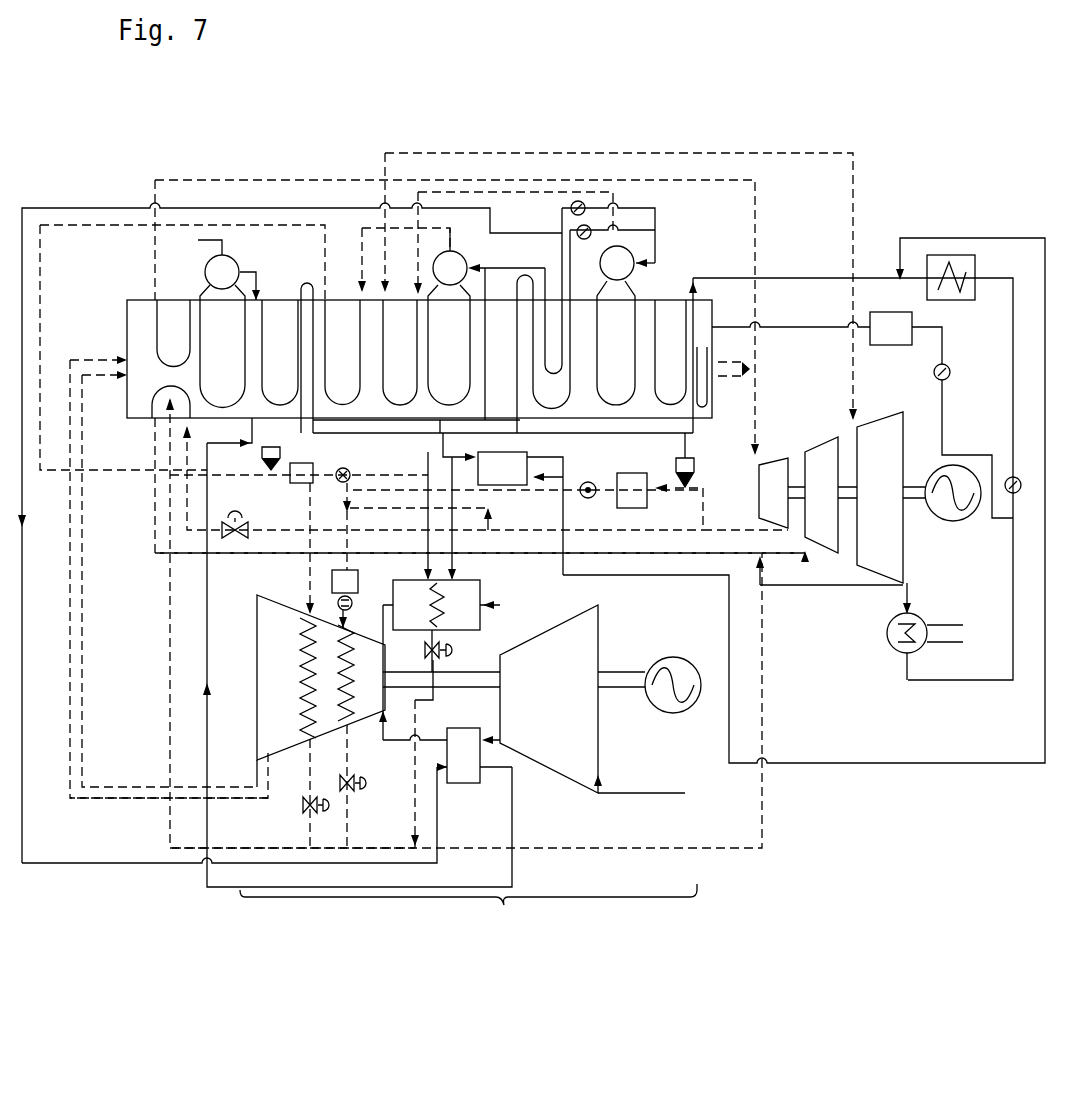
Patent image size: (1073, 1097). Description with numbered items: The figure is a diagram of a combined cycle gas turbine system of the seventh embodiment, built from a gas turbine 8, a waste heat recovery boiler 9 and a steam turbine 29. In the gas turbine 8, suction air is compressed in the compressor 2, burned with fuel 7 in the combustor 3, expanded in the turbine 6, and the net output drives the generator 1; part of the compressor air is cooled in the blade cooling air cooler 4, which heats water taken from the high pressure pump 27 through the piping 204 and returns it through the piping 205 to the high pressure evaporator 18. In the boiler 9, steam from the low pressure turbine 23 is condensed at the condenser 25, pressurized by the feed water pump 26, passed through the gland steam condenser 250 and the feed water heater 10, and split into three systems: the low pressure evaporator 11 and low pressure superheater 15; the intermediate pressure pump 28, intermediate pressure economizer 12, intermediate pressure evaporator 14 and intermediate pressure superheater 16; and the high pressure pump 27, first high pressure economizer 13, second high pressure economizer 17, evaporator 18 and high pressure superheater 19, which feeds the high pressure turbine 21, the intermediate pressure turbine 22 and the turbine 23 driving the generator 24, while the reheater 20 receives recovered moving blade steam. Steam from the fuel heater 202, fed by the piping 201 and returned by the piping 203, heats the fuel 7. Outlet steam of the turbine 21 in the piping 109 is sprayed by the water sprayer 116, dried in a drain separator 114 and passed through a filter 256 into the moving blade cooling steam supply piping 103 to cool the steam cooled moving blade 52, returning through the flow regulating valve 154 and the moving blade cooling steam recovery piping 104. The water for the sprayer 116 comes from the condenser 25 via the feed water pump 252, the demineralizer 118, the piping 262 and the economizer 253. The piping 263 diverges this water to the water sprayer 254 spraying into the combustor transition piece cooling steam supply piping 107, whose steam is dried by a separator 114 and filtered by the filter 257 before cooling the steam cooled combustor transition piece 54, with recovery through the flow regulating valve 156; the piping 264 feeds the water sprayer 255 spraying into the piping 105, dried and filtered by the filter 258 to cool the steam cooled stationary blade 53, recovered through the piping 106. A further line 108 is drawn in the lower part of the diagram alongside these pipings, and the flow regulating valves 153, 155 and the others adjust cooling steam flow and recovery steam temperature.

The generator 1 is at (692, 672).
The compressor 2 is at (600, 630).
The combustor 3 is at (493, 604).
The blade cooling air cooler 4 is at (460, 742).
The turbine 6 is at (257, 597).
The fuel 7 is at (545, 495).
The gas turbine 8 is at (468, 909).
The waste heat recovery boiler 9 is at (127, 300).
The feed water heater 10 is at (688, 367).
The low pressure evaporator 11 is at (628, 367).
The intermediate pressure economizer 12 is at (548, 368).
The first high pressure economizer 13 is at (543, 331).
The intermediate pressure evaporator 14 is at (463, 367).
The low pressure superheater 15 is at (415, 367).
The intermediate pressure superheater 16 is at (355, 367).
The second high pressure economizer 17 is at (295, 367).
The high pressure evaporator 18 is at (233, 367).
The high pressure superheater 19 is at (185, 350).
The reheater 20 is at (160, 388).
The high pressure turbine 21 is at (787, 503).
The intermediate pressure turbine 22 is at (837, 495).
The low pressure turbine 23 is at (891, 495).
The generator 24 is at (975, 521).
The condenser 25 is at (890, 656).
The feed water pump 26 is at (1008, 478).
The high pressure pump 27 is at (566, 250).
The intermediate pressure pump 28 is at (562, 205).
The steam turbine 29 is at (836, 586).
The steam cooled moving blade 52 is at (285, 660).
The steam cooled stationary blade 53 is at (356, 697).
The steam cooled combustor transition piece 54 is at (458, 610).
The moving blade cooling steam supply piping 103 is at (310, 584).
The moving blade cooling steam recovery piping 104 is at (305, 824).
The piping 105 is at (322, 526).
The piping 106 is at (346, 838).
The combustor transition piece cooling steam supply piping 107 is at (426, 520).
The water supply line 108 is at (438, 840).
The piping 109 is at (705, 496).
The drain separator 114 is at (648, 510).
The water sprayer 116 is at (703, 463).
The demineralizer 118 is at (878, 346).
The flow regulating valve 153 is at (239, 508).
The flow regulating valve 154 is at (303, 805).
The flow regulating valve 155 is at (370, 795).
The flow regulating valve 156 is at (452, 652).
The piping 201 is at (444, 506).
The fuel heater 202 is at (520, 513).
The piping 203 is at (826, 765).
The piping 204 is at (62, 208).
The piping 205 is at (520, 826).
The gland steam condenser 250 is at (975, 272).
The feed water pump 252 is at (948, 372).
The economizer 253 is at (723, 355).
The water sprayer 254 is at (262, 468).
The water sprayer 255 is at (423, 548).
The filter 256 is at (596, 509).
The filter 257 is at (342, 458).
The filter 258 is at (367, 595).
The piping 262 is at (800, 327).
The piping 263 is at (610, 435).
The piping 264 is at (366, 452).